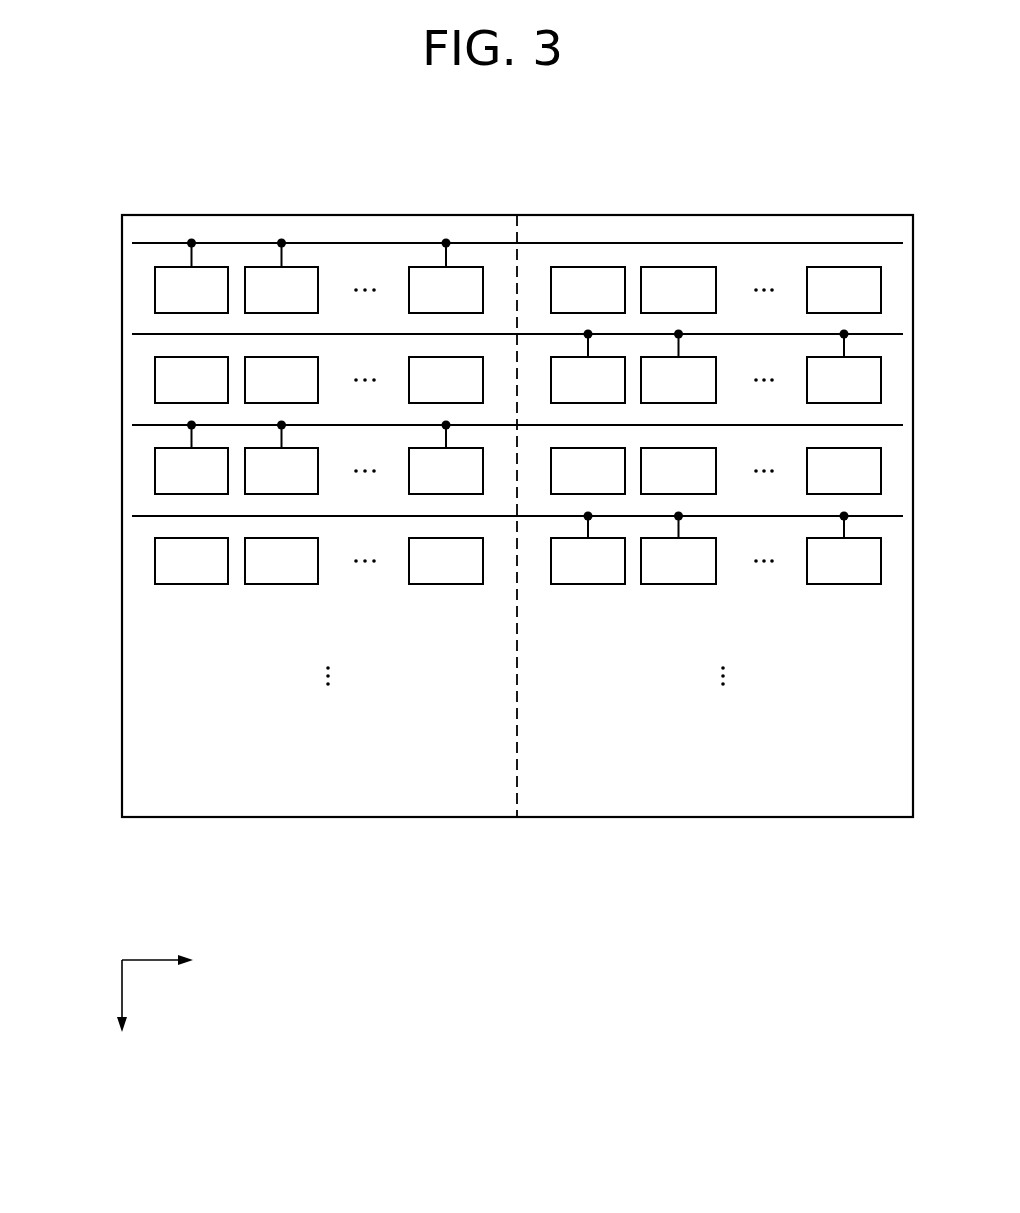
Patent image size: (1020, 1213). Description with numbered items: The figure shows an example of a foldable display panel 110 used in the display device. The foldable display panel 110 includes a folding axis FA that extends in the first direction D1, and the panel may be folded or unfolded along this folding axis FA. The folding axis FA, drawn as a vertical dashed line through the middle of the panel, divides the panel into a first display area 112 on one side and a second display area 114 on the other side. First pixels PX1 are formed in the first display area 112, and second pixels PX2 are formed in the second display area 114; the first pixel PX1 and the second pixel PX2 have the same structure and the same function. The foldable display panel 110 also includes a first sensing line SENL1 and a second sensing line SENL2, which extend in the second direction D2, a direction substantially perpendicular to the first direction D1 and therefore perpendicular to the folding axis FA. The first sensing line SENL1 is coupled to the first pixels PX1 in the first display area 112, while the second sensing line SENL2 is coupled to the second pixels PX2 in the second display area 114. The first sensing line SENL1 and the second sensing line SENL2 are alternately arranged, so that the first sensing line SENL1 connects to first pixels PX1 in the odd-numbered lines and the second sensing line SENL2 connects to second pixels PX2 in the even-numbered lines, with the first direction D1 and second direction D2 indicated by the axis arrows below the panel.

The foldable display panel 110 is at (867, 171).
The first display area 112 is at (319, 579).
The second display area 114 is at (716, 578).
The folding axis FA is at (517, 803).
The first sensing line SENL1 is at (134, 243).
The second sensing line SENL2 is at (134, 334).
The first pixel PX1 is at (319, 425).
The second pixel PX2 is at (716, 425).
The first direction D1 is at (129, 1013).
The second direction D2 is at (177, 961).